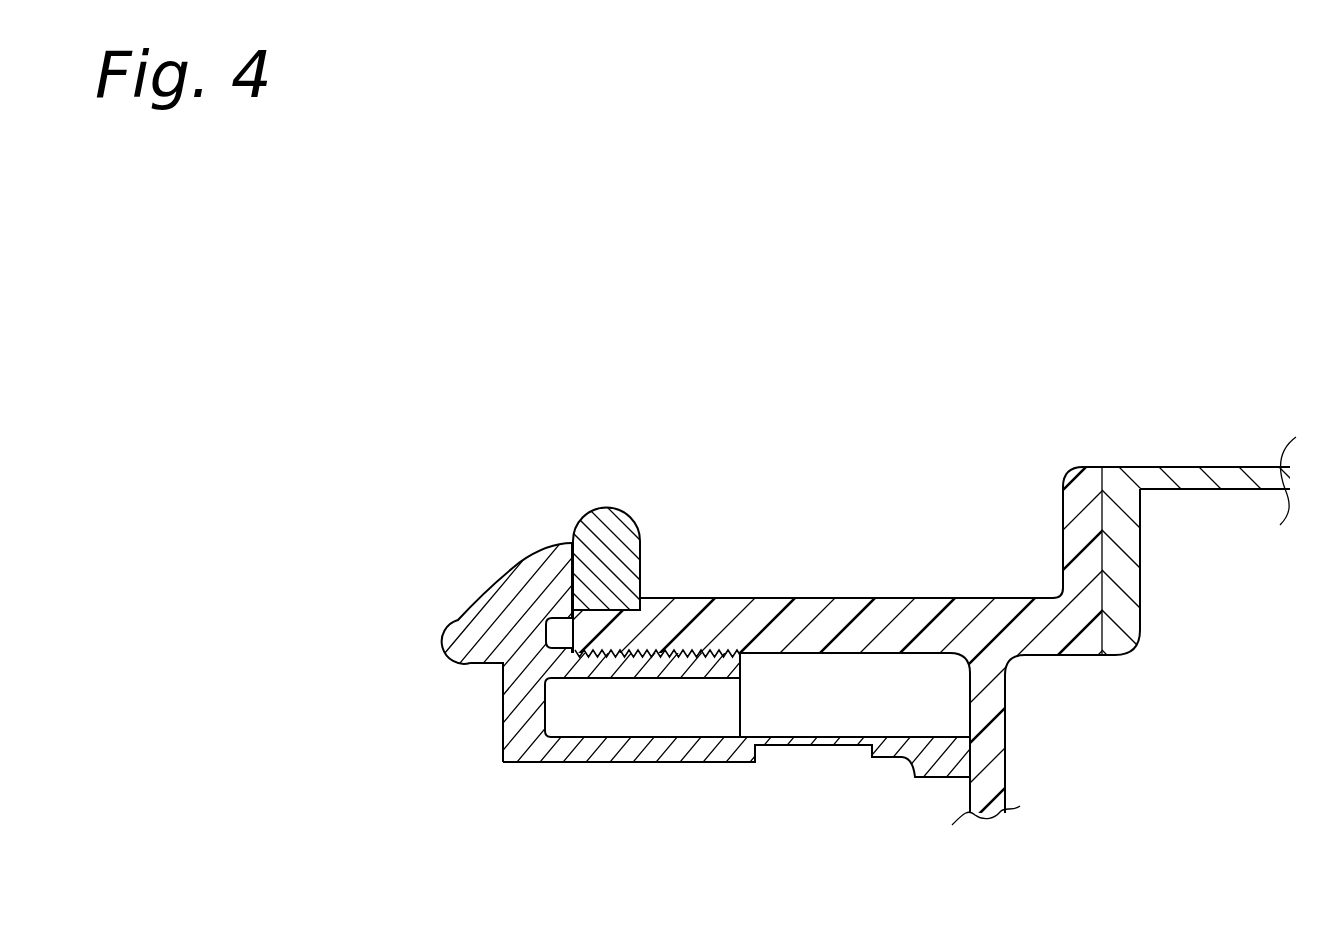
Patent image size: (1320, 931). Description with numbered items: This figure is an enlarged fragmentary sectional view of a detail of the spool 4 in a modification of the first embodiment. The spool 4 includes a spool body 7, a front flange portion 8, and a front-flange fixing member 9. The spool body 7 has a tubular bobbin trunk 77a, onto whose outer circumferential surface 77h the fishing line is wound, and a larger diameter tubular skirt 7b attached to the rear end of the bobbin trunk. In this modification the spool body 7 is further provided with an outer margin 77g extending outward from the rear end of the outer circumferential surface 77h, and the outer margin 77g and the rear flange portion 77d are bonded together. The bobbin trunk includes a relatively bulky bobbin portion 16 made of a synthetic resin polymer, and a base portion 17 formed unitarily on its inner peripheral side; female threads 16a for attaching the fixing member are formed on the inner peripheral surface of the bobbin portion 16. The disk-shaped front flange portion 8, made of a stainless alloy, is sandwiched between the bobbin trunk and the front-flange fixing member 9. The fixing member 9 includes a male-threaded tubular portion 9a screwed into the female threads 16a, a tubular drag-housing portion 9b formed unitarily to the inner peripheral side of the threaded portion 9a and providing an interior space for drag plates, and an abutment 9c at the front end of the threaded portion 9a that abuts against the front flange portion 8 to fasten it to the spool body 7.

The spool 4 is at (846, 601).
The spool body 7 is at (885, 587).
The skirt 7b is at (1215, 456).
The front flange portion 8 is at (607, 527).
The front-flange fixing member 9 is at (521, 563).
The male-threaded tubular portion 9a is at (593, 652).
The drag-housing portion 9b is at (668, 750).
The abutment 9c is at (485, 640).
The bobbin portion 16 is at (906, 640).
The female threads 16a is at (742, 650).
The base portion 17 is at (990, 745).
The bobbin trunk 77a is at (993, 599).
The rear flange portion 77d is at (1125, 555).
The outer margin 77g is at (1063, 505).
The outer circumferential surface 77h is at (716, 598).